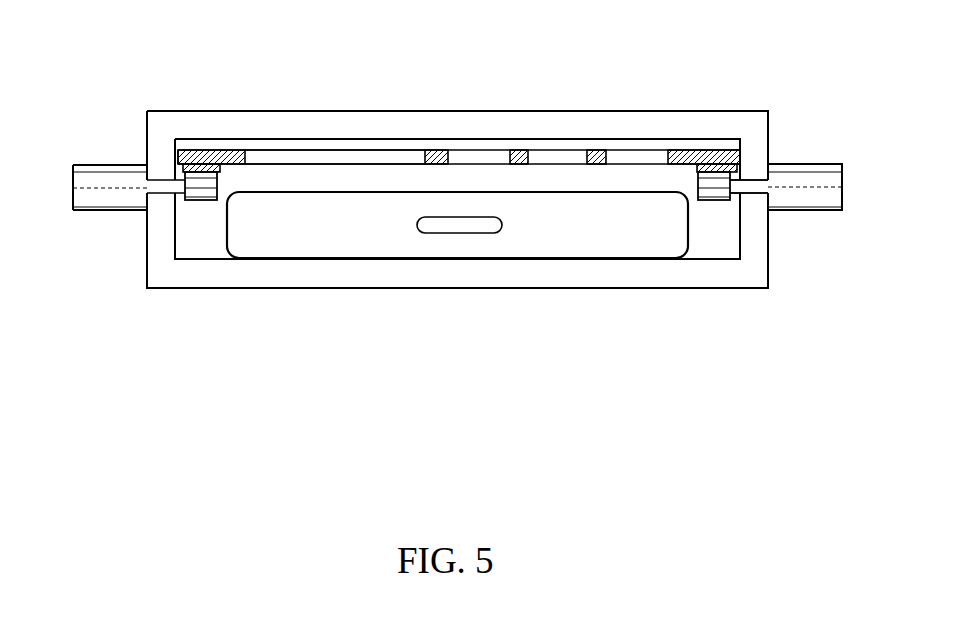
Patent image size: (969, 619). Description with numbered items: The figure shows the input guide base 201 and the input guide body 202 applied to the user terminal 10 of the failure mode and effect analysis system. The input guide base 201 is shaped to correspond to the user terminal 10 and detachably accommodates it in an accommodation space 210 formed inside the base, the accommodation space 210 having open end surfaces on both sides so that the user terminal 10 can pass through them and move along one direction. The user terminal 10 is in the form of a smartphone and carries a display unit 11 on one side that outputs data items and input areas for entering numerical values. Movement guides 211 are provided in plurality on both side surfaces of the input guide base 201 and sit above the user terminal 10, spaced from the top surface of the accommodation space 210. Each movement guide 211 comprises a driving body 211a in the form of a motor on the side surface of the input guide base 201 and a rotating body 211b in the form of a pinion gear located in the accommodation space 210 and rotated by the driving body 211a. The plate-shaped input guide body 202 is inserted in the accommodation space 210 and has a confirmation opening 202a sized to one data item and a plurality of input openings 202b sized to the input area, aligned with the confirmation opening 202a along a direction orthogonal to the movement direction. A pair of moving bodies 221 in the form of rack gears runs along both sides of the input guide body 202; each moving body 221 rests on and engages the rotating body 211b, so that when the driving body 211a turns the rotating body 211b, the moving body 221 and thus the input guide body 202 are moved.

The user terminal 10 is at (371, 227).
The display unit 11 is at (565, 185).
The input guide base 201 is at (144, 260).
The input guide body 202 is at (403, 144).
The confirmation opening 202a is at (327, 158).
The input opening 202b is at (637, 155).
The accommodation space 210 is at (213, 235).
The movement guide 211 is at (87, 150).
The driving body 211a is at (803, 197).
The rotating body 211b is at (713, 200).
The moving body 221 is at (180, 176).